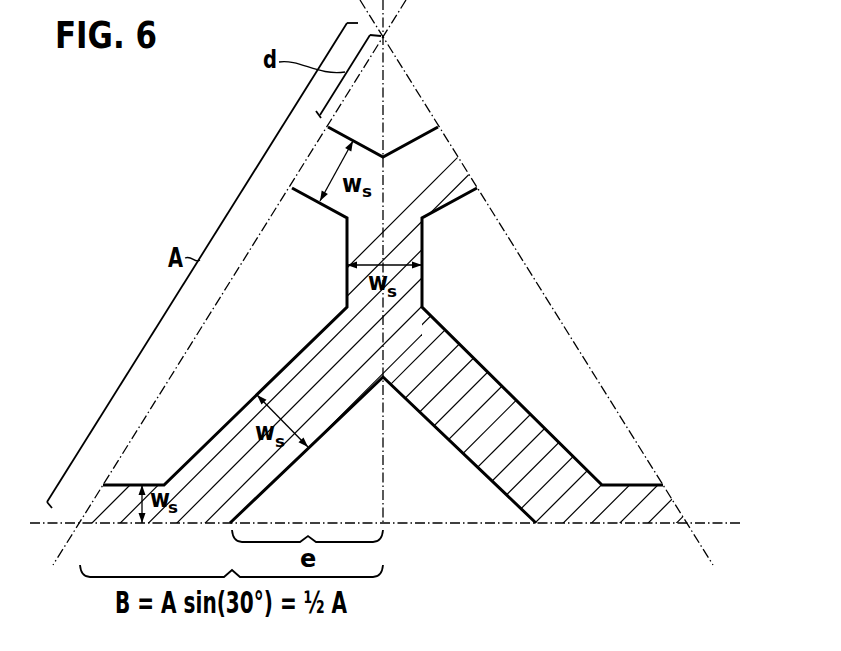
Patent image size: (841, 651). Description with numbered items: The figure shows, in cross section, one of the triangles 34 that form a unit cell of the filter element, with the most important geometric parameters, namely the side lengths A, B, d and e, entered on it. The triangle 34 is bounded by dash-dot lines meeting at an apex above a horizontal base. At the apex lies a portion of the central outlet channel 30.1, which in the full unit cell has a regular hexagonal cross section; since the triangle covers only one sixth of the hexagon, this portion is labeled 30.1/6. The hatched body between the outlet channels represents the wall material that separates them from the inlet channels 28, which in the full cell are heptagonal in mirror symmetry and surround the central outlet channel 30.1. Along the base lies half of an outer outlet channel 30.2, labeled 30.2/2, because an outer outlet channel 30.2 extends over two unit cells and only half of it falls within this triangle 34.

The central outlet channel 30.1 is at (432, 109).
The first cut-out 6 is at (398, 90).
The outer outlet channel 30.2 is at (383, 488).
The second cut-out 2 is at (465, 510).
The inlet channel 28 is at (517, 280).
The triangle 34 is at (586, 156).